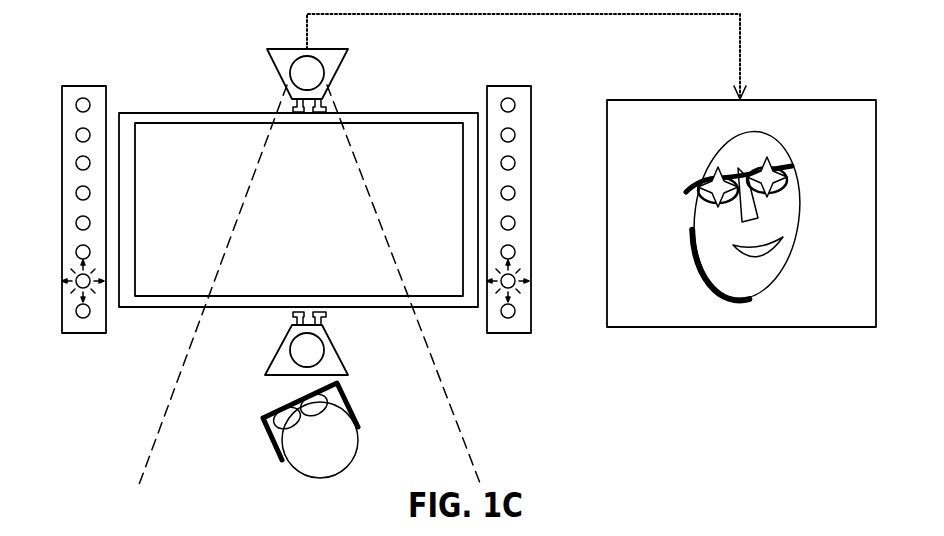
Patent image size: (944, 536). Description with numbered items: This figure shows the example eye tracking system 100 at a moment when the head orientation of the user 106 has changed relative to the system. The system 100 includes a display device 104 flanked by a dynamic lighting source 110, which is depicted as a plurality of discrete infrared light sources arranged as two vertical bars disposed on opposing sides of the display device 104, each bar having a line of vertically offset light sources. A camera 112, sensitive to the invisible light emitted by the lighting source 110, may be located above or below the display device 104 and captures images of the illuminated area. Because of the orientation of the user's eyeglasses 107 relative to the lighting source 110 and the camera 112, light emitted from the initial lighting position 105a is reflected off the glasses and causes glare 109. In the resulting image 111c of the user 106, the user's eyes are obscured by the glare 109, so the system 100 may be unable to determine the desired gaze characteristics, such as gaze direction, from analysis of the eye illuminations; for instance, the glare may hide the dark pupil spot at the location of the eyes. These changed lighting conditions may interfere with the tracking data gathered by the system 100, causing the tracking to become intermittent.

The system 100 is at (97, 24).
The display device 104 is at (200, 113).
The initial lighting position 105a is at (63, 280).
The user 106 is at (281, 455).
The eyeglasses 107 is at (340, 390).
The glare 109 is at (790, 161).
The dynamic lighting source 110 is at (85, 334).
The image 111c is at (740, 328).
The camera 112 is at (270, 53).